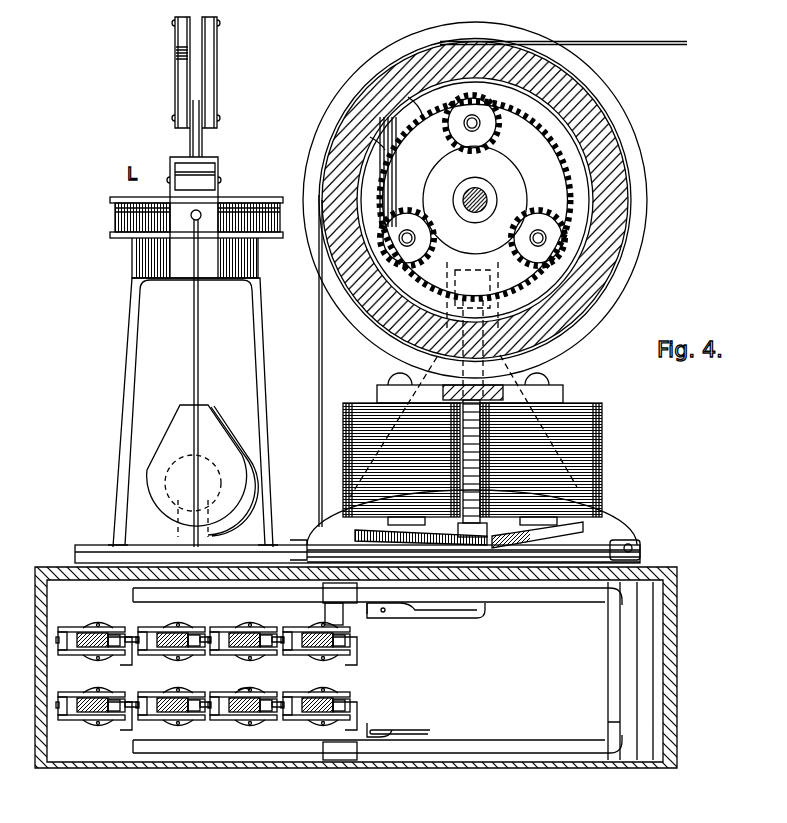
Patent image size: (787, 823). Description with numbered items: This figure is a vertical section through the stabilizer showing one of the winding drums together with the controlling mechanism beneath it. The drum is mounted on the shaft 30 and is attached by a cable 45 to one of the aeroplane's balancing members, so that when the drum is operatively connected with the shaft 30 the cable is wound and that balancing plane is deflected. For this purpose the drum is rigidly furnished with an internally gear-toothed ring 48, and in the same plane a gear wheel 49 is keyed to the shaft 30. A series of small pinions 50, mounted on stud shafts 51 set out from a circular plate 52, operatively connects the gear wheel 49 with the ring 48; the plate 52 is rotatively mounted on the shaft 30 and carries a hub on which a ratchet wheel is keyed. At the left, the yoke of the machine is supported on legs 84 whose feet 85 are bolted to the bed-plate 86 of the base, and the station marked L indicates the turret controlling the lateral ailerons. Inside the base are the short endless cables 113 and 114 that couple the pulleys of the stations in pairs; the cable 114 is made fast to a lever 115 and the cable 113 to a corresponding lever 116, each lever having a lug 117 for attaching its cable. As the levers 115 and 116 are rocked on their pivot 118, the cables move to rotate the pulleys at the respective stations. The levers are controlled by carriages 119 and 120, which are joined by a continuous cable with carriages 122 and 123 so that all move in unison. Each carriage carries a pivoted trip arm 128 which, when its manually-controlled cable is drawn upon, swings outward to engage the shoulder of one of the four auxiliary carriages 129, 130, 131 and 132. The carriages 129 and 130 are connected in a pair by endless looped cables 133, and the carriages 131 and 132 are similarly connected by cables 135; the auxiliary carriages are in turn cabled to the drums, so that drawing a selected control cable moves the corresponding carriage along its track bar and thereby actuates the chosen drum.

The shaft 30 is at (485, 204).
The cable 45 is at (643, 46).
The internally gear-toothed ring 48 is at (583, 200).
The gear wheel 49 is at (475, 200).
The pinion 50 is at (456, 133).
The stud shaft 51 is at (479, 126).
The circular plate 52 is at (475, 200).
The leg 84 is at (122, 417).
The foot 85 is at (75, 545).
The bed-plate 86 is at (68, 570).
The endless cable 113 is at (445, 610).
The endless cable 114 is at (428, 724).
The lever 115 is at (494, 746).
The lever 116 is at (541, 598).
The lug 117 is at (373, 613).
The pivot 118 is at (614, 684).
The carriage 119 is at (328, 692).
The carriage 120 is at (305, 627).
The carriage 122 is at (82, 692).
The carriage 123 is at (82, 627).
The trip arm 128 is at (122, 660).
The auxiliary carriage 129 is at (258, 692).
The auxiliary carriage 130 is at (158, 692).
The auxiliary carriage 131 is at (258, 627).
The auxiliary carriage 132 is at (155, 627).
The endless looped cable 133 is at (238, 690).
The cable 135 is at (238, 623).